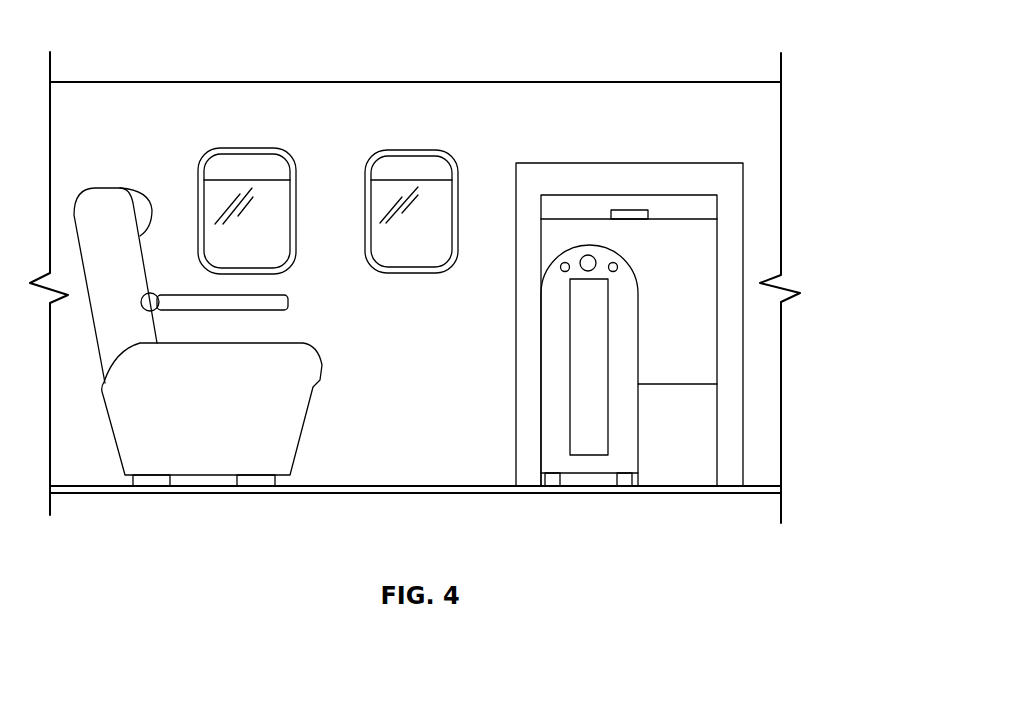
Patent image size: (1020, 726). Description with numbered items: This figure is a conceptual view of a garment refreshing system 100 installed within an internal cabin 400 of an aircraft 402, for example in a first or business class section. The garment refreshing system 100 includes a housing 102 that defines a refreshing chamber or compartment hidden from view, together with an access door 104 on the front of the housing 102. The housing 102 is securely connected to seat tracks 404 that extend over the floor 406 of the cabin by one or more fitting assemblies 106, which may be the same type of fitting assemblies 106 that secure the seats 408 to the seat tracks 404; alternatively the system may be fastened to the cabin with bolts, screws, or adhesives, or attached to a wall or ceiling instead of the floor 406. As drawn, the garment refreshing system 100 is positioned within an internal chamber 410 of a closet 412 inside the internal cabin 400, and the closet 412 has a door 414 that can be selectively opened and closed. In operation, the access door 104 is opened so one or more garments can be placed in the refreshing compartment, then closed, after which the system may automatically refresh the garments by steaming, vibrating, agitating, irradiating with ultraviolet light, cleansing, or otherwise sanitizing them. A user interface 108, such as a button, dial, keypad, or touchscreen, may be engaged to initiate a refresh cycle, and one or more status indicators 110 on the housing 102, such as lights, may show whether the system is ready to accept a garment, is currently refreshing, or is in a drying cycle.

The garment refreshing system 100 is at (625, 281).
The housing 102 is at (638, 317).
The access door 104 is at (589, 367).
The fitting assemblies 106 is at (551, 486).
The user interface 108 is at (588, 274).
The status indicators 110 is at (562, 270).
The internal cabin 400 is at (362, 141).
The aircraft 402 is at (528, 82).
The seat tracks 404 is at (415, 486).
The floor 406 is at (337, 493).
The seats 408 is at (104, 218).
The internal chamber 410 is at (687, 246).
The closet 412 is at (722, 163).
The door 414 is at (574, 205).